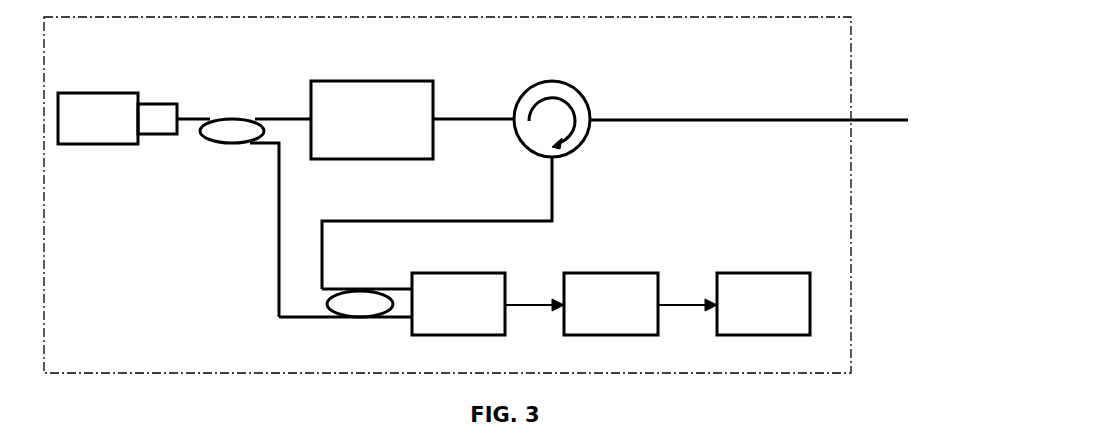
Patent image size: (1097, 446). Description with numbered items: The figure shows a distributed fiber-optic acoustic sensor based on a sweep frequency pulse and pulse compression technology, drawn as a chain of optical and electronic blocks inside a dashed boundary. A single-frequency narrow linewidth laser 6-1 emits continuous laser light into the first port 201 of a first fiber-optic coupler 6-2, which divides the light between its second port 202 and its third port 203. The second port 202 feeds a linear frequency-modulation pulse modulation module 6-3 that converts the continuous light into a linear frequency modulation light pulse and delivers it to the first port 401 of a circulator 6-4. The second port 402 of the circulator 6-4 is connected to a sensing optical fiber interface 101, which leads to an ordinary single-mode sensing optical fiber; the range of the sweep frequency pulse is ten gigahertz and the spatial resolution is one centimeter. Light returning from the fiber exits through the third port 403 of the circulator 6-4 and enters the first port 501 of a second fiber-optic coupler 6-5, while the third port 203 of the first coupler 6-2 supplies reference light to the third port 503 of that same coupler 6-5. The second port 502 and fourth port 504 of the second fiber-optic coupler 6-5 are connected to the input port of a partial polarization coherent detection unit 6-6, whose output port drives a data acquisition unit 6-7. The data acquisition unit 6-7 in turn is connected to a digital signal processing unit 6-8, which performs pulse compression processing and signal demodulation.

The single-frequency narrow linewidth laser 6-1 is at (91, 93).
The first fiber-optic coupler 6-2 is at (228, 118).
The linear frequency-modulation pulse modulation module 6-3 is at (377, 81).
The circulator 6-4 is at (592, 111).
The second fiber-optic coupler 6-5 is at (358, 288).
The partial polarization coherent detection unit 6-6 is at (506, 272).
The data acquisition unit 6-7 is at (603, 273).
The digital signal processing unit 6-8 is at (737, 273).
The sensing optical fiber interface 101 is at (866, 120).
The first port of the first fiber-optic coupler 201 is at (203, 106).
The second port of the first fiber-optic coupler 202 is at (283, 106).
The third port of the first fiber-optic coupler 203 is at (264, 230).
The first port of the circulator 401 is at (473, 109).
The second port of the circulator 402 is at (720, 111).
The third port of the circulator 403 is at (512, 189).
The first port of the second fiber-optic coupler 501 is at (381, 255).
The second port of the second fiber-optic coupler 502 is at (367, 281).
The third port of the second fiber-optic coupler 503 is at (319, 330).
The fourth port of the second fiber-optic coupler 504 is at (386, 330).